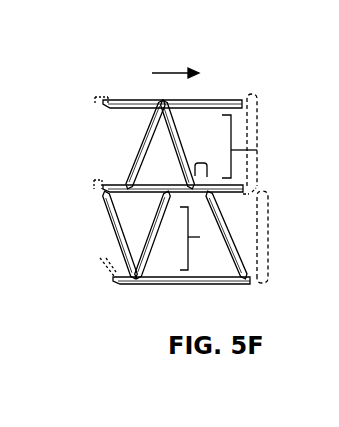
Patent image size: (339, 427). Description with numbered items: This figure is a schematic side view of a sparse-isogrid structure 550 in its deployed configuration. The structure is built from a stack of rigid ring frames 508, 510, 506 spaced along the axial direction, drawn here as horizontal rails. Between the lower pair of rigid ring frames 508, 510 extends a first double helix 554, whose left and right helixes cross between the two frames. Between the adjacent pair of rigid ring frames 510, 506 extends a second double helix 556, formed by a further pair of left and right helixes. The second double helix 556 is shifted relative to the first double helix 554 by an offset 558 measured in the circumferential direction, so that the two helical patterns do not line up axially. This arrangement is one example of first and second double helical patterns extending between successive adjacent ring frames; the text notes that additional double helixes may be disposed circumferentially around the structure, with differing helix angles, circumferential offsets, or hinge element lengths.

The sparse-isogrid structure 550 is at (105, 77).
The rigid ring frame 506 is at (93, 117).
The rigid ring frame 510 is at (103, 194).
The rigid ring frame 508 is at (112, 276).
The offset 558 is at (228, 114).
The second double helix 556 is at (245, 150).
The first double helix 554 is at (243, 263).